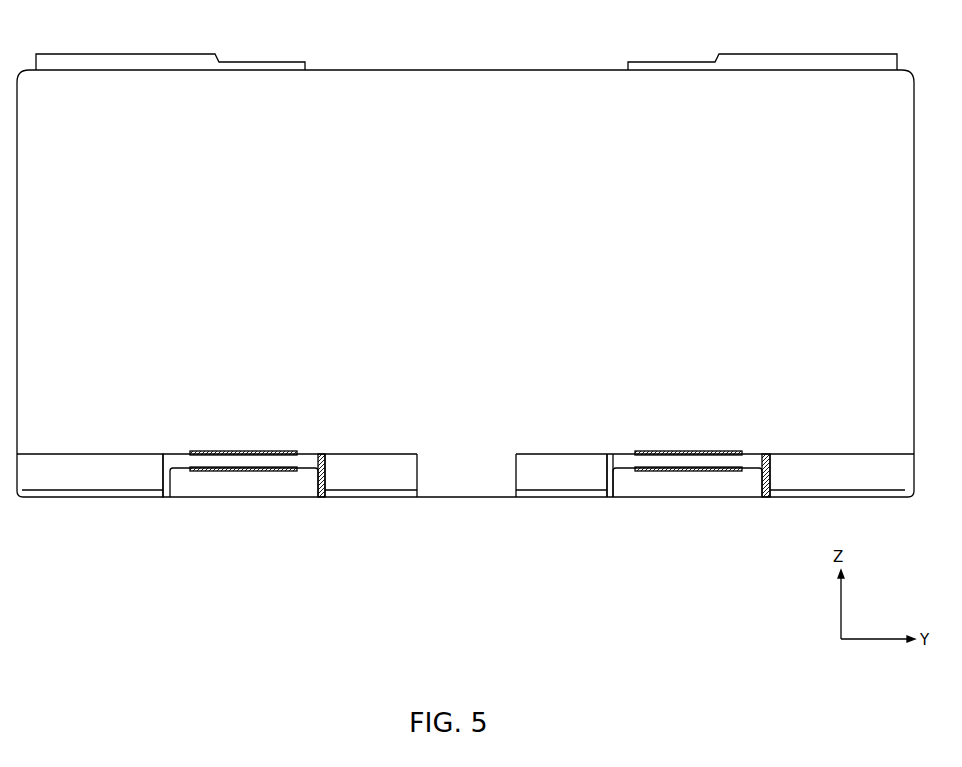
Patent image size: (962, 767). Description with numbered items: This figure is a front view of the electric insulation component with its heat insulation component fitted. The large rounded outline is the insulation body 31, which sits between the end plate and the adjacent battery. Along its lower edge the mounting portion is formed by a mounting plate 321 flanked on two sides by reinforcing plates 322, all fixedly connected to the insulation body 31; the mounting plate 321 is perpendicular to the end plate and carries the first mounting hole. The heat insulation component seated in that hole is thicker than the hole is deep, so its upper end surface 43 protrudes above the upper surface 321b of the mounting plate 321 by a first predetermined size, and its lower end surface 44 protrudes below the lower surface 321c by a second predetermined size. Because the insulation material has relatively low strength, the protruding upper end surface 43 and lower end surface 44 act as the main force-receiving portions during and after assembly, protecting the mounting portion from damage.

The insulation body 31 is at (405, 85).
The reinforcing plates 322 is at (167, 495).
The mounting plate 321 is at (265, 462).
The upper surface 321b is at (622, 453).
The upper end surface 43 is at (718, 452).
The lower end surface 44 is at (685, 470).
The lower surface 321c is at (757, 468).